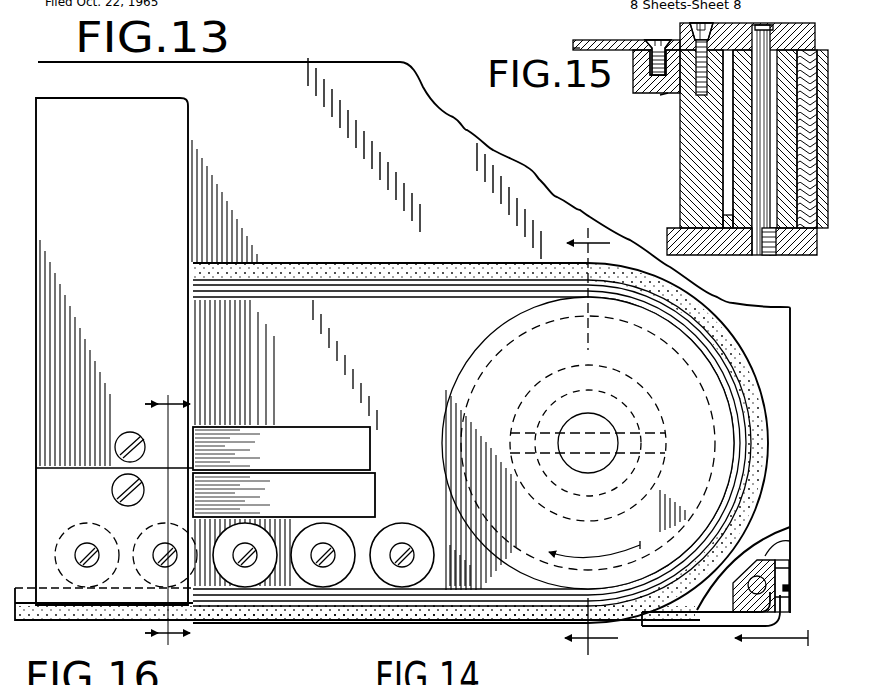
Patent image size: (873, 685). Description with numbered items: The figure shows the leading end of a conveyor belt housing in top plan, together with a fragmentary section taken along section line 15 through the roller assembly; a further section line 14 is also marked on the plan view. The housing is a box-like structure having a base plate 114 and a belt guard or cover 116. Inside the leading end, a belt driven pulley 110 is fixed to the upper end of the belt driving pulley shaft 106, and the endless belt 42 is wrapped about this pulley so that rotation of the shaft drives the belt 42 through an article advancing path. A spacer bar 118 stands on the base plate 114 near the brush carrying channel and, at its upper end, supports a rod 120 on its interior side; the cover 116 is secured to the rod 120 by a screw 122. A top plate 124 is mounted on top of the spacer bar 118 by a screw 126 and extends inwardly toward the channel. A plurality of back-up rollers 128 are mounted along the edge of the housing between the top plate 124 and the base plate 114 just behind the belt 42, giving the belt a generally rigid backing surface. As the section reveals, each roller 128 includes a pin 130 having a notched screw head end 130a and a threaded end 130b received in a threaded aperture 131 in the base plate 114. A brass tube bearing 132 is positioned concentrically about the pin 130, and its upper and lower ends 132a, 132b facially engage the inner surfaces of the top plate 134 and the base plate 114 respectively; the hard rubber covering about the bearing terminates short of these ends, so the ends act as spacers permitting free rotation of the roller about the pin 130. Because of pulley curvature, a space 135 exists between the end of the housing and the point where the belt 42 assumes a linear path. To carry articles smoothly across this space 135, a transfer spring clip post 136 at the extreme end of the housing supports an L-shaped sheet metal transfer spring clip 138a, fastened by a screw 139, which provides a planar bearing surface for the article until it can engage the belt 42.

In FIG. 13, the section line 14- 14 is at (686, 454).
In FIG. 13, the section line 15- 15 is at (152, 511).
In FIG. 13, the belt 42 is at (450, 621).
In FIG. 15, the belt 42 is at (828, 248).
In FIG. 13, the belt driving pulley shaft 106 is at (608, 421).
In FIG. 13, the belt driven pulley 110 is at (483, 381).
In FIG. 13, the base plate 114 is at (290, 139).
In FIG. 15, the base plate 114 is at (688, 255).
In FIG. 13, the belt guard or cover 116 is at (125, 165).
In FIG. 15, the belt guard or cover 116 is at (577, 48).
In FIG. 13, the spacer bar 118 is at (330, 508).
In FIG. 15, the spacer bar 118 is at (680, 160).
In FIG. 13, the rod 120 is at (330, 462).
In FIG. 15, the rod 120 is at (660, 95).
In FIG. 13, the screw 122 is at (131, 432).
In FIG. 15, the screw 122 is at (636, 88).
In FIG. 13, the top plate 124 is at (121, 545).
In FIG. 15, the top plate 124 is at (590, 40).
In FIG. 13, the screw 126 is at (112, 491).
In FIG. 15, the screw 126 is at (680, 40).
In FIG. 13, the back-up rollers 128 is at (353, 539).
In FIG. 15, the back-up rollers 128 is at (733, 180).
In FIG. 13, the pin 130 is at (313, 567).
In FIG. 15, the pin 130 is at (753, 45).
In FIG. 15, the notched screw head end 130a is at (725, 31).
In FIG. 15, the threaded end 130b is at (771, 255).
In FIG. 15, the threaded aperture 131 is at (760, 255).
In FIG. 15, the brass tube bearing 132 is at (737, 118).
In FIG. 15, the upper end of bearing 132a is at (808, 43).
In FIG. 15, the lower end of bearing 132b is at (733, 216).
In FIG. 15, the top plate 134 is at (733, 143).
In FIG. 13, the space 135 is at (787, 528).
In FIG. 13, the transfer spring clip post 136 is at (788, 548).
In FIG. 13, the transfer spring clip 138a is at (688, 626).
In FIG. 13, the screw 139 is at (790, 590).